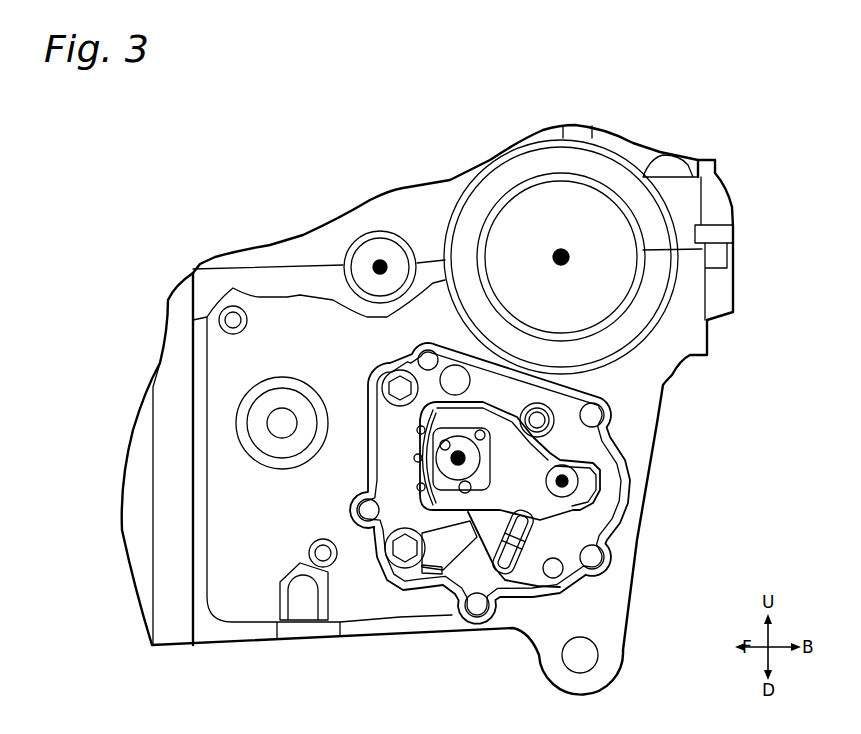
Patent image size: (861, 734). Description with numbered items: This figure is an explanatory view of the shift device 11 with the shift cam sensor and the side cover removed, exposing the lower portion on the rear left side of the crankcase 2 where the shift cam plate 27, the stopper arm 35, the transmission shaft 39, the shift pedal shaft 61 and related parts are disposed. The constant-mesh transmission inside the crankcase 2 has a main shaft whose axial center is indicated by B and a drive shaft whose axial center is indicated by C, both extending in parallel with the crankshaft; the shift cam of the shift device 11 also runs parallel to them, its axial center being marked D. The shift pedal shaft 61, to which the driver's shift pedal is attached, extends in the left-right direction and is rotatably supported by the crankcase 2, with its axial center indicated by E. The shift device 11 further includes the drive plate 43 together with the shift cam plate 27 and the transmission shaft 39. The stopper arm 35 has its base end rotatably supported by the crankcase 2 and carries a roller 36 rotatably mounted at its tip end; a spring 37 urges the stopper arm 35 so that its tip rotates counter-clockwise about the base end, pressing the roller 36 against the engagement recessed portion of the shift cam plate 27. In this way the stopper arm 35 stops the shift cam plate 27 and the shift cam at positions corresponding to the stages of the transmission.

The crankcase 2 is at (238, 358).
The shift device 11 is at (398, 439).
The shift cam plate 27 is at (418, 455).
The stopper arm 35 is at (443, 547).
The roller 36 is at (473, 520).
The spring 37 is at (433, 573).
The transmission shaft 39 is at (460, 456).
The drive plate 43 is at (604, 421).
The shift pedal shaft 61 is at (593, 463).
The axial center of the main shaft B is at (380, 264).
The axial center of the drive shaft C is at (561, 252).
The axial center of the shift cam D is at (462, 470).
The axial center of the shift pedal shaft E is at (568, 481).